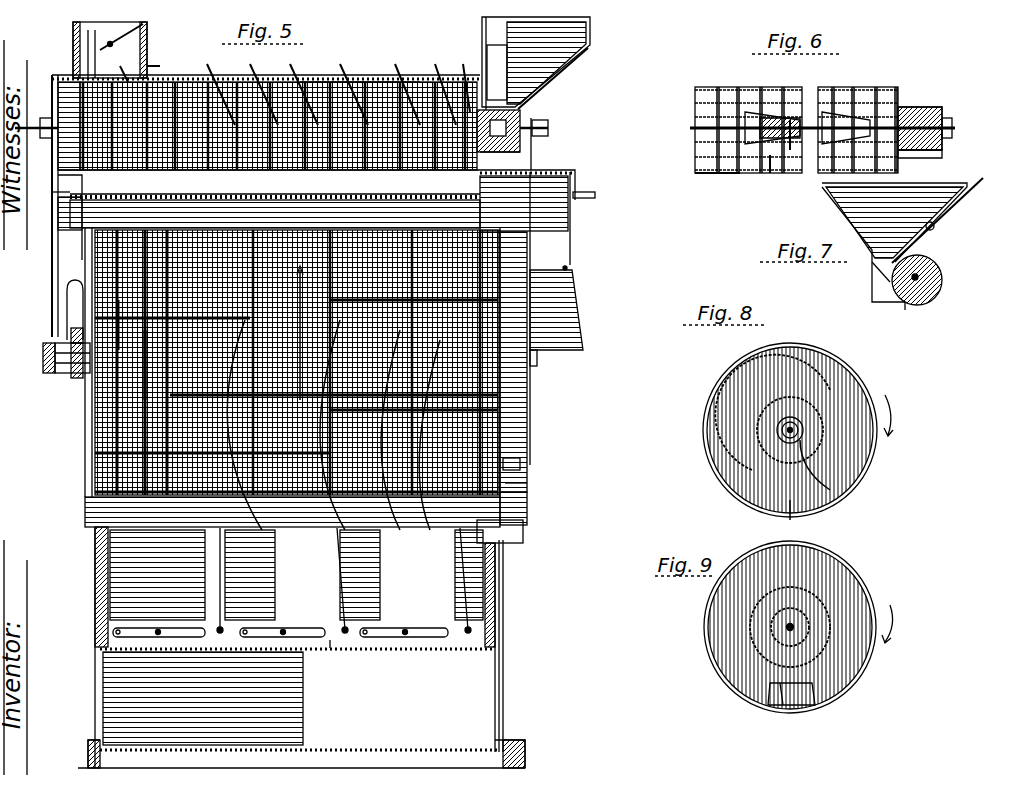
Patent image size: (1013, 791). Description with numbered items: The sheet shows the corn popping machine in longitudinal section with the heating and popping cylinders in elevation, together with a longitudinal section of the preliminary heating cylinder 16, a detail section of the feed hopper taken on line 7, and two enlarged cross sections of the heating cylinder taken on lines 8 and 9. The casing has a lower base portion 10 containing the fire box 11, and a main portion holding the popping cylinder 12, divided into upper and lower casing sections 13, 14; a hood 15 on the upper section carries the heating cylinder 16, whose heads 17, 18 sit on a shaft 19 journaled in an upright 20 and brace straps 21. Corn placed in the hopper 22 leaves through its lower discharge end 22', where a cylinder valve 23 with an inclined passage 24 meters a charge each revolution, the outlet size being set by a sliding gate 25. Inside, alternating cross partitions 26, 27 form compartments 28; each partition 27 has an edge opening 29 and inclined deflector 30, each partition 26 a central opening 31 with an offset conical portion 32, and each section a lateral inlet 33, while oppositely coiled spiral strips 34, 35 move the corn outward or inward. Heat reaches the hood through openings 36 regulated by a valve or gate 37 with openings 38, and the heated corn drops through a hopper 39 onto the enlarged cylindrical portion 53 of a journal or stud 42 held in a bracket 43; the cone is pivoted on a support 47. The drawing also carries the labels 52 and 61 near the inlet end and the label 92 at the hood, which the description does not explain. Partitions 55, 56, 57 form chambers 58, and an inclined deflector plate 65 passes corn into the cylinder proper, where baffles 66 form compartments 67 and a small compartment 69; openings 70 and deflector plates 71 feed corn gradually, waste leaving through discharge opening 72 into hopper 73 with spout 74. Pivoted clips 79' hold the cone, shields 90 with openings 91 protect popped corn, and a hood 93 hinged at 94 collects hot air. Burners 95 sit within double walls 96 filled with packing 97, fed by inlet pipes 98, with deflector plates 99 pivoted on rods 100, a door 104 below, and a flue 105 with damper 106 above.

In FIG. 5, the section line 7 is at (500, 159).
In FIG. 6, the section line 8 is at (749, 205).
In FIG. 6, the section line 9 is at (772, 205).
In FIG. 5, the lower base portion 10 is at (504, 690).
In FIG. 5, the fire box 11 is at (335, 645).
In FIG. 5, the popping chamber or cylinder 12 is at (85, 512).
In FIG. 5, the upper casing section 13 is at (70, 291).
In FIG. 5, the lower casing section 14 is at (90, 470).
In FIG. 5, the hood 15 is at (352, 78).
In FIG. 5, the preliminary heating cylinder 16 is at (44, 74).
In FIG. 6, the preliminary heating cylinder 16 is at (838, 86).
In FIG. 8, the preliminary heating cylinder 16 is at (868, 462).
In FIG. 9, the preliminary heating cylinder 16 is at (865, 588).
In FIG. 5, the head 17 is at (80, 152).
In FIG. 6, the head 17 is at (703, 92).
In FIG. 5, the head 18 is at (462, 80).
In FIG. 6, the head 18 is at (905, 105).
In FIG. 5, the shaft 19 is at (548, 129).
In FIG. 6, the shaft 19 is at (955, 128).
In FIG. 7, the shaft 19 is at (920, 277).
In FIG. 8, the shaft 19 is at (795, 428).
In FIG. 9, the shaft 19 is at (788, 627).
In FIG. 5, the upright 20 is at (535, 150).
In FIG. 5, the brace straps 21 is at (46, 138).
In FIG. 5, the hopper 22 is at (558, 63).
In FIG. 7, the hopper 22 is at (907, 242).
In FIG. 7, the lower discharge end 22' is at (864, 280).
In FIG. 5, the cylinder valve 23 is at (506, 126).
In FIG. 6, the cylinder valve 23 is at (940, 145).
In FIG. 7, the cylinder valve 23 is at (940, 292).
In FIG. 5, the inclined passage 24 is at (531, 120).
In FIG. 6, the inclined passage 24 is at (930, 110).
In FIG. 7, the inclined passage 24 is at (905, 305).
In FIG. 5, the sliding gate 25 is at (545, 82).
In FIG. 7, the sliding gate 25 is at (945, 230).
In FIG. 5, the cross partition 26 is at (349, 86).
In FIG. 6, the cross partition 26 is at (795, 160).
In FIG. 9, the cross partition 26 is at (848, 660).
In FIG. 5, the cross partition 27 is at (326, 86).
In FIG. 6, the cross partition 27 is at (900, 92).
In FIG. 5, the compartments 28 is at (130, 80).
In FIG. 6, the compartments 28 is at (735, 176).
In FIG. 5, the opening 29 is at (299, 86).
In FIG. 6, the opening 29 is at (792, 160).
In FIG. 8, the opening 29 is at (800, 510).
In FIG. 5, the inclined deflector 30 is at (402, 86).
In FIG. 6, the opening 31 is at (822, 128).
In FIG. 6, the offset conical portion 32 is at (798, 110).
In FIG. 8, the offset conical portion 32 is at (795, 418).
In FIG. 6, the lateral inlet 33 is at (768, 175).
In FIG. 8, the lateral inlet 33 is at (830, 490).
In FIG. 6, the spiral strip 34 is at (925, 90).
In FIG. 9, the spiral strip 34 is at (828, 617).
In FIG. 6, the spiral strip 35 is at (865, 100).
In FIG. 8, the spiral strip 35 is at (772, 385).
In FIG. 5, the openings 36 is at (470, 197).
In FIG. 5, the valve or gate 37 is at (595, 195).
In FIG. 5, the openings 38 is at (432, 198).
In FIG. 5, the hopper 39 is at (60, 196).
In FIG. 5, the journal or stud 42 is at (62, 366).
In FIG. 5, the bracket 43 is at (76, 385).
In FIG. 5, the cross piece or support 47 is at (540, 362).
In FIG. 5, the collar 52 is at (75, 334).
In FIG. 5, the enlarged cylindrical portion 53 is at (45, 352).
In FIG. 5, the partition 55 is at (160, 240).
In FIG. 5, the partition 56 is at (190, 240).
In FIG. 5, the partition 57 is at (220, 240).
In FIG. 5, the chambers or compartments 58 is at (150, 435).
In FIG. 5, the vertical bar 61 is at (115, 326).
In FIG. 5, the inclined deflector plate 65 is at (142, 400).
In FIG. 5, the baffles or cross partitions 66 is at (350, 235).
In FIG. 5, the compartments 67 is at (240, 245).
In FIG. 5, the compartment 69 is at (555, 250).
In FIG. 5, the opening 70 is at (258, 522).
In FIG. 5, the inclined deflector plate 71 is at (425, 530).
In FIG. 5, the discharge opening 72 is at (480, 376).
In FIG. 5, the hopper 73 is at (520, 514).
In FIG. 5, the discharge spout 74 is at (508, 590).
In FIG. 5, the pivoted clips 79' is at (544, 460).
In FIG. 5, the imperforate shields or baffle plates 90 is at (112, 480).
In FIG. 5, the opening 91 is at (522, 484).
In FIG. 5, the door panel 92 is at (575, 280).
In FIG. 5, the hood 93 is at (566, 268).
In FIG. 5, the hinge 94 is at (515, 396).
In FIG. 5, the burners 95 is at (410, 638).
In FIG. 5, the walls 96 is at (493, 588).
In FIG. 5, the intermediate packing 97 is at (504, 556).
In FIG. 5, the inlet pipes 98 is at (372, 638).
In FIG. 5, the deflector plates 99 is at (455, 590).
In FIG. 5, the rods 100 is at (468, 634).
In FIG. 5, the door 104 is at (450, 655).
In FIG. 5, the ventilation flue or chimney 105 is at (150, 50).
In FIG. 5, the damper 106 is at (100, 45).